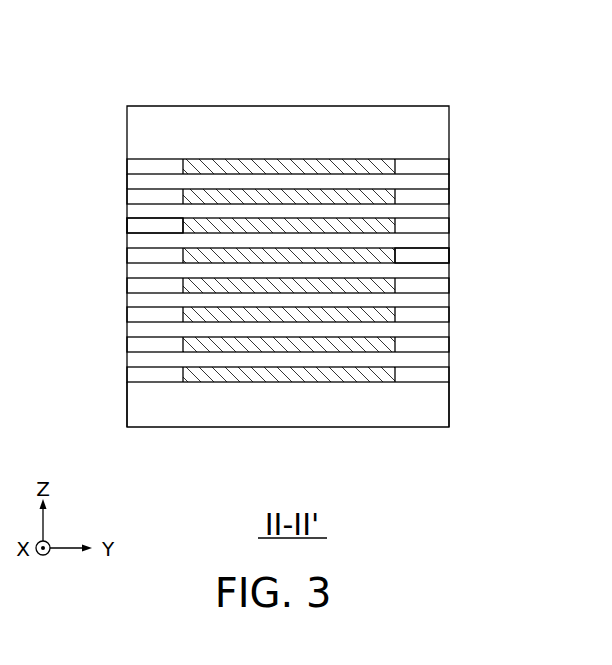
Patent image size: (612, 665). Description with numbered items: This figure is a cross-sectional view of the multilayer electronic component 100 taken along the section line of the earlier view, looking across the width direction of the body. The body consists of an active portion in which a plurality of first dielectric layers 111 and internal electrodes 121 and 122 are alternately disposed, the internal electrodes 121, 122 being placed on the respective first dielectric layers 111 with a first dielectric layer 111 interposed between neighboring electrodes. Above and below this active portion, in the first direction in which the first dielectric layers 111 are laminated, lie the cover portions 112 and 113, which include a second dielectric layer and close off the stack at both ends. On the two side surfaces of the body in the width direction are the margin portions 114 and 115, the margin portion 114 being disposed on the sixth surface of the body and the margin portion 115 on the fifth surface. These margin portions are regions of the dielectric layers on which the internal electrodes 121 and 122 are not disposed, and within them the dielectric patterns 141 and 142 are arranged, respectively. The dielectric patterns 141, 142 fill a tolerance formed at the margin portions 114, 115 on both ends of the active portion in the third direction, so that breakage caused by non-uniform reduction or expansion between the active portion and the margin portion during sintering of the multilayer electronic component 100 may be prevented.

The multilayer electronic component 100 is at (132, 33).
The first dielectric layer 111 is at (391, 183).
The cover portion 112 is at (272, 126).
The cover portion 113 is at (272, 418).
The margin portion 114 is at (156, 392).
The margin portion 115 is at (419, 391).
The internal electrode 121 is at (418, 165).
The internal electrode 122 is at (386, 200).
The dielectric pattern 141 is at (132, 226).
The dielectric pattern 142 is at (443, 256).